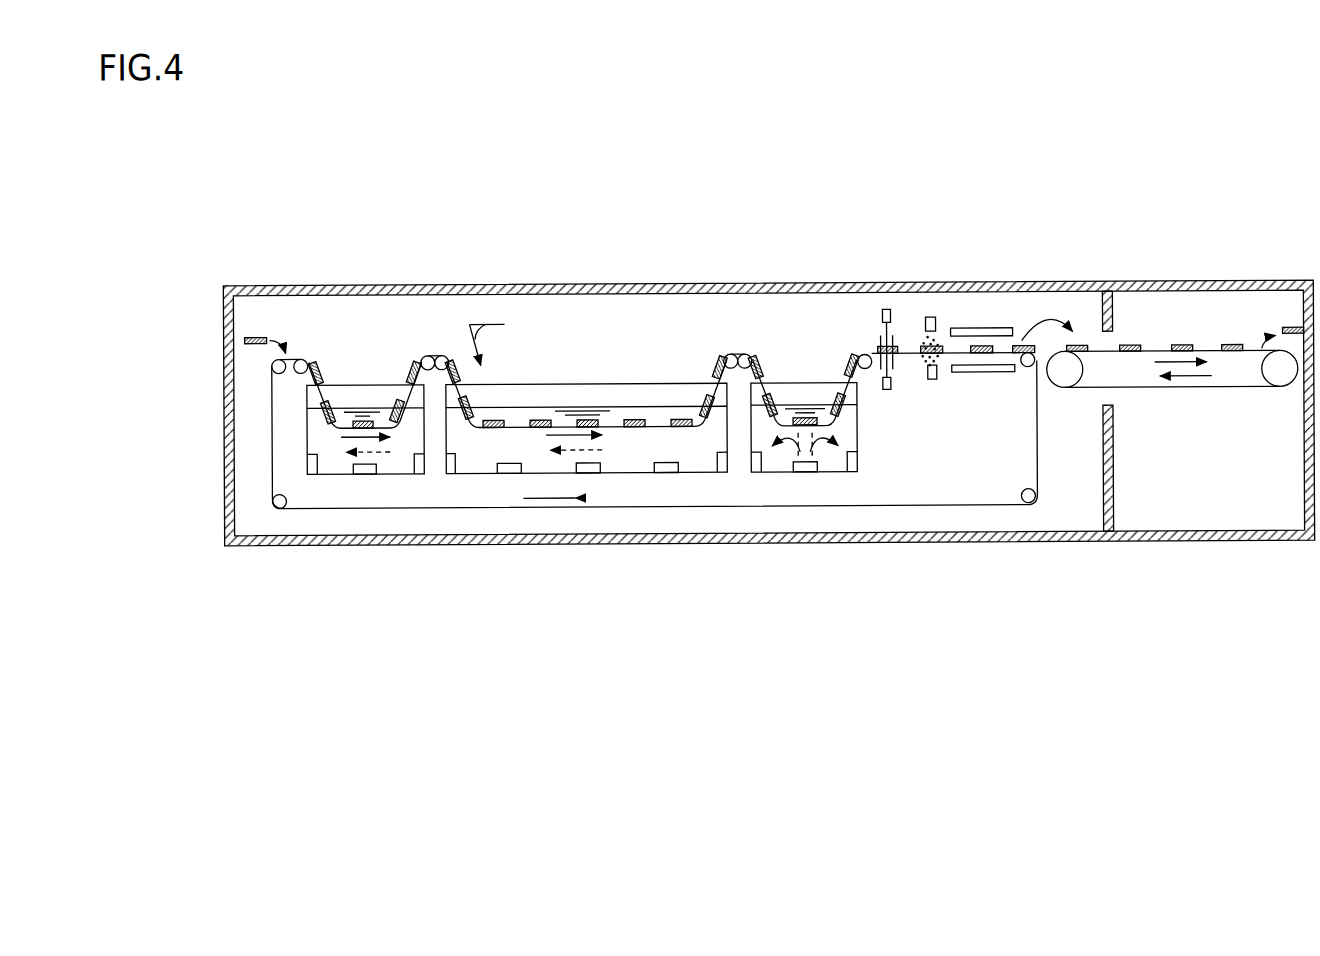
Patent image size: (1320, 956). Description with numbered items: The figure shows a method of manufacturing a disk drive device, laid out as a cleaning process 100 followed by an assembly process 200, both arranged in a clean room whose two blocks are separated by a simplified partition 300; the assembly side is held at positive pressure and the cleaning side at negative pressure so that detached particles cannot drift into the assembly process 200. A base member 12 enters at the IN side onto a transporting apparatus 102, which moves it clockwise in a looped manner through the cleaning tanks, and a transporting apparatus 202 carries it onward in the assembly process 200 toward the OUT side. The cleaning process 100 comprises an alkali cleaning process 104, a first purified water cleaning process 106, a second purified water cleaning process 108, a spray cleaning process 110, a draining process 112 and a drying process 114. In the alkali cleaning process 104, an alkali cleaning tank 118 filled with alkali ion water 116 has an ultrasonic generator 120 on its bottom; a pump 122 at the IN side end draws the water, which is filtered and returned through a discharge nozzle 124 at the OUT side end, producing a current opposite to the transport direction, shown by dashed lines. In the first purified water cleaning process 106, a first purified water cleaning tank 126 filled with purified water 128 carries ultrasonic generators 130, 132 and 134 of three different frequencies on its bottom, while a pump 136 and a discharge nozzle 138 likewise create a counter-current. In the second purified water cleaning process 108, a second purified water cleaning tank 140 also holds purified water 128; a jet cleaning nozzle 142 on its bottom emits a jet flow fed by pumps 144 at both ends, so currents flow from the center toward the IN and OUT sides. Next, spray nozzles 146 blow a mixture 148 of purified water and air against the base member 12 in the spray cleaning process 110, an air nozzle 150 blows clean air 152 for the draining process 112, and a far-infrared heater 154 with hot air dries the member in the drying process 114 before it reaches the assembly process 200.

The base member 12 is at (247, 334).
The cleaning process 100 is at (652, 327).
The transporting apparatus 102 is at (301, 356).
The alkali cleaning process 104 is at (359, 486).
The first purified water cleaning process 106 is at (648, 484).
The second purified water cleaning process 108 is at (814, 484).
The spray cleaning process 110 is at (872, 410).
The draining process 112 is at (950, 410).
The drying process 114 is at (1014, 409).
The alkali ion water 116 is at (324, 462).
The alkali cleaning tank 118 is at (363, 382).
The ultrasonic generator 120 is at (364, 474).
The pump 122 is at (316, 462).
The discharge nozzle 124 is at (418, 462).
The first purified water cleaning tank 126 is at (576, 382).
The purified water 128 is at (628, 456).
The ultrasonic generator 130 is at (508, 474).
The ultrasonic generator 132 is at (586, 474).
The ultrasonic generator 134 is at (665, 474).
The pump 136 is at (454, 462).
The discharge nozzle 138 is at (720, 462).
The second purified water cleaning tank 140 is at (797, 382).
The jet cleaning nozzle 142 is at (805, 474).
The pumps 144 is at (758, 462).
The spray nozzles 146 is at (887, 309).
The mixture of purified water and air 148 is at (880, 345).
The air nozzle 150 is at (931, 318).
The clean air 152 is at (975, 336).
The far-infrared heater 154 is at (1016, 328).
The assembly process 200 is at (1172, 303).
The transporting apparatus 202 is at (1160, 352).
The partition 300 is at (1112, 471).